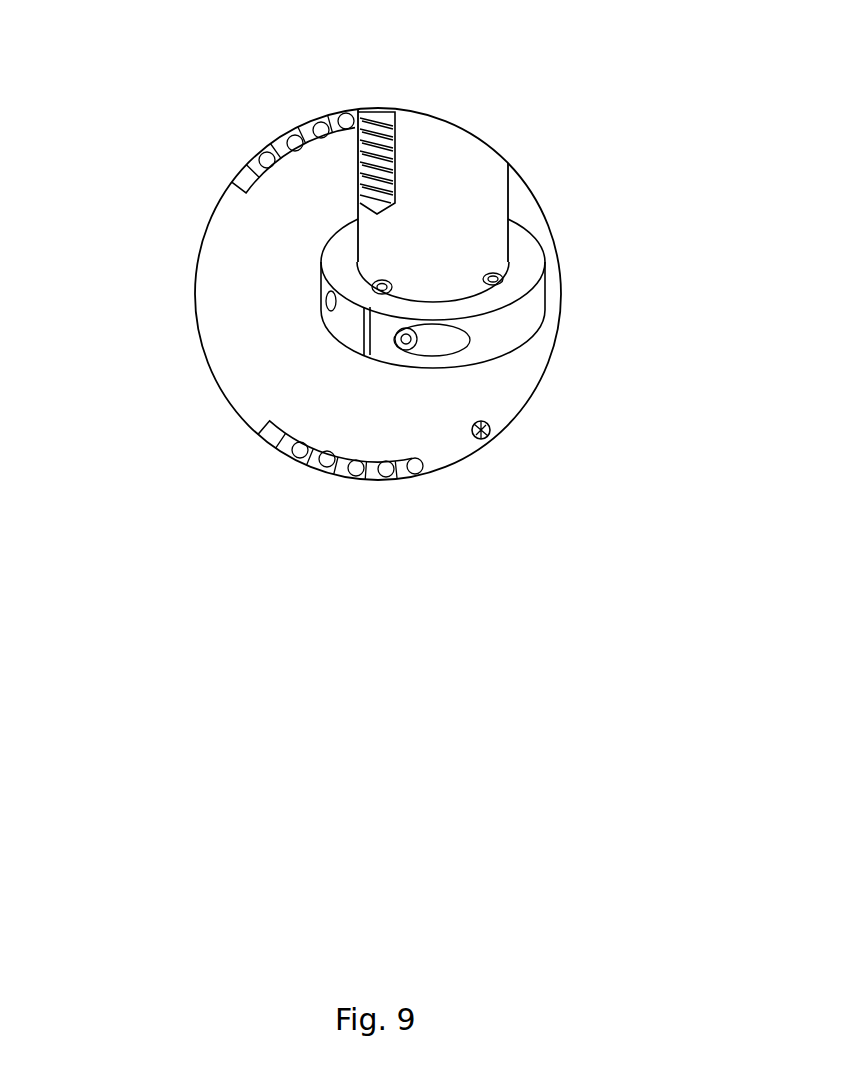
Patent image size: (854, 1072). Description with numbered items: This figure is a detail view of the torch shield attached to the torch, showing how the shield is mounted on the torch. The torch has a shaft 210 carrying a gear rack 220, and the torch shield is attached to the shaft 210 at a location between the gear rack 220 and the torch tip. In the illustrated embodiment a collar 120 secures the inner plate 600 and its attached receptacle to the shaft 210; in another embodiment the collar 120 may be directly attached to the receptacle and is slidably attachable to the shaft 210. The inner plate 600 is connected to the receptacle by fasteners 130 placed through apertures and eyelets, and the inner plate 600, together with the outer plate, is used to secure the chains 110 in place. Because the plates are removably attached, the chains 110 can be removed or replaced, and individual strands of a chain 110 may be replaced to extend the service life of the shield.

The inner plate 600 is at (312, 250).
The chains 110 is at (322, 132).
The shaft 210 is at (453, 205).
The gear rack 220 is at (352, 148).
The collar 120 is at (472, 335).
The fasteners 130 is at (488, 432).